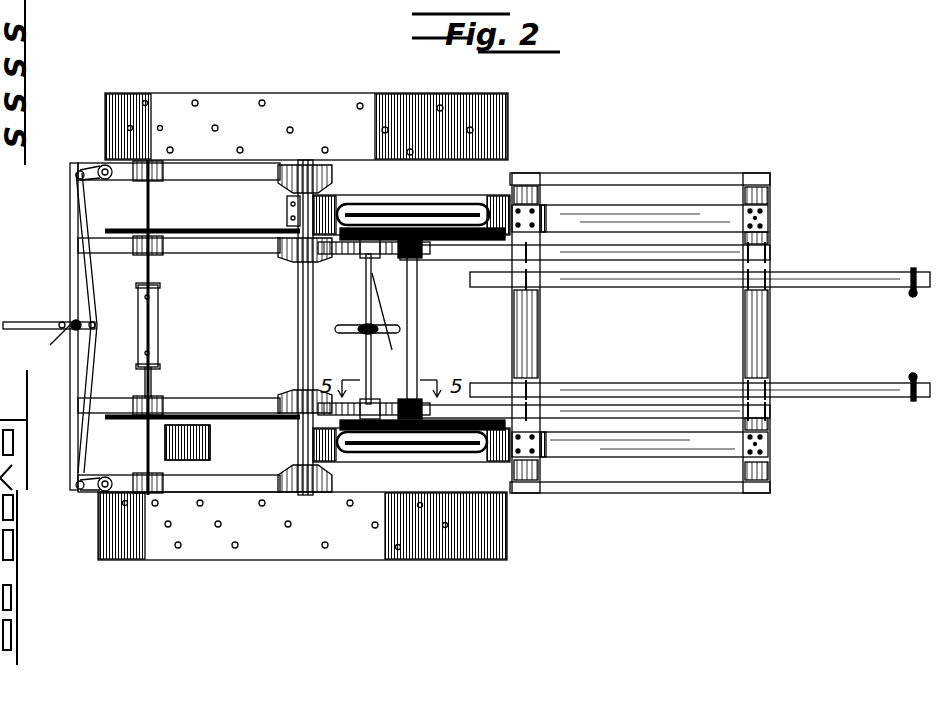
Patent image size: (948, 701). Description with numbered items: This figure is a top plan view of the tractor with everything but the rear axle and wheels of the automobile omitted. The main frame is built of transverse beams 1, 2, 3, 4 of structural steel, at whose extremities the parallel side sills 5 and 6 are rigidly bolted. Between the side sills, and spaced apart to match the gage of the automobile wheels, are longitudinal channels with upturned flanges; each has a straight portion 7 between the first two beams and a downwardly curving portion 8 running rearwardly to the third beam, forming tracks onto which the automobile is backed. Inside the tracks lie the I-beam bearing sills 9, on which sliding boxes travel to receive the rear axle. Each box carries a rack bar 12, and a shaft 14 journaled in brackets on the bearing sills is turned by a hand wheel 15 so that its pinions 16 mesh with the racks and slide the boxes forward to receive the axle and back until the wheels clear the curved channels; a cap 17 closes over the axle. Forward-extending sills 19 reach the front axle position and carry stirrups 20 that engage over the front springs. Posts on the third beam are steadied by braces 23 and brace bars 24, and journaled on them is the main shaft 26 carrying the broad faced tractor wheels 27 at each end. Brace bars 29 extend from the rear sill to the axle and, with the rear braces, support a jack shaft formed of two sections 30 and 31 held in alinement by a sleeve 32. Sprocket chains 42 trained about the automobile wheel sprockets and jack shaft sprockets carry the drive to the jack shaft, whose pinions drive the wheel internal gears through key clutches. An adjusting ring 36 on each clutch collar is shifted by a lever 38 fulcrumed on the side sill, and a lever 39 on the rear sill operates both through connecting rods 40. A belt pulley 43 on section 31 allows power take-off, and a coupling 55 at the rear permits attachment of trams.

The transverse beam 1 is at (758, 190).
The transverse beam 2 is at (548, 190).
The transverse beam 3 is at (288, 200).
The transverse beam 4 is at (72, 207).
The side sill 5 is at (683, 180).
The side sill 6 is at (702, 484).
The straight portion of channel track 7 is at (636, 218).
The downwardly curving portion of channel track 8 is at (500, 200).
The bearing sill 9 is at (673, 422).
The rack bar 12 is at (338, 228).
The shaft 14 is at (366, 291).
The hand wheel 15 is at (352, 333).
The pinion 16 is at (380, 402).
The cap 17 is at (416, 262).
The sill 19 is at (820, 280).
The stirrup 20 is at (912, 296).
The brace 23 is at (480, 178).
The brace bar 24 is at (236, 170).
The main shaft 26 is at (298, 337).
The tractor wheel 27 is at (272, 108).
The brace bar 29 is at (242, 246).
The jack shaft section 30 is at (146, 272).
The jack shaft section 31 is at (144, 381).
The sleeve 32 is at (140, 345).
The adjusting ring 36 is at (112, 168).
The lever 38 is at (110, 490).
The lever 39 is at (14, 320).
The connecting rod 40 is at (80, 266).
The sprocket chain 42 is at (188, 236).
The belt pulley 43 is at (210, 445).
The coupling 55 is at (70, 320).